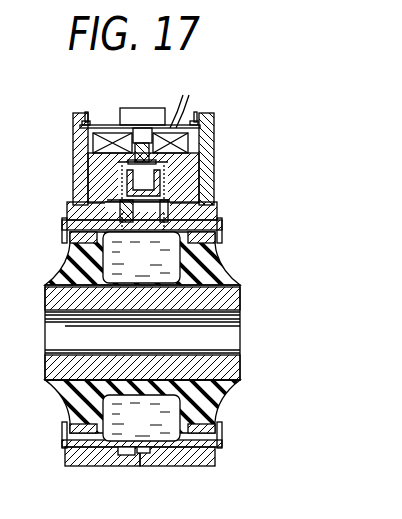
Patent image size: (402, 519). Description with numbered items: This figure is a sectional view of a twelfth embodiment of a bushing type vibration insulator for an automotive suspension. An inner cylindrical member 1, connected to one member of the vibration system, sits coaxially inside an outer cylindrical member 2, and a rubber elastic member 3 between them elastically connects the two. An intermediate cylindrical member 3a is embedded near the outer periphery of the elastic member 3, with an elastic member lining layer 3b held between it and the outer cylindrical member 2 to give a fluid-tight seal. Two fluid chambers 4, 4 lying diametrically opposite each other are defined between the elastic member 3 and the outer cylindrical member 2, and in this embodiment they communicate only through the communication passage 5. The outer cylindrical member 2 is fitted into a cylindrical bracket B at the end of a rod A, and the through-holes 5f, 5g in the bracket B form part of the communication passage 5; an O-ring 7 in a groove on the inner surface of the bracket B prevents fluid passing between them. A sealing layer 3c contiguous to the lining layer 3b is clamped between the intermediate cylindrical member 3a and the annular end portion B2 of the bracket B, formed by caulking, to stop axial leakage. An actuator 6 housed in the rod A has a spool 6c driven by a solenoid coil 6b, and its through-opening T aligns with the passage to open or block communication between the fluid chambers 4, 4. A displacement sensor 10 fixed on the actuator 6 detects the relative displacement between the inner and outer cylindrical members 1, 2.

The inner cylindrical member 1 is at (238, 298).
The outer cylindrical member 2 is at (218, 223).
The elastic member 3 is at (232, 386).
The intermediate cylindrical member 3a is at (207, 466).
The elastic member lining layer 3b is at (92, 466).
The sealing layer 3c is at (63, 442).
The fluid chamber 4 is at (141, 336).
The communication passage 5 is at (167, 170).
The through-hole 5f is at (117, 206).
The through-hole 5g is at (167, 210).
The actuator 6 is at (87, 119).
The solenoid coil 6b is at (98, 142).
The spool 6c is at (144, 128).
The O-ring 7 is at (143, 454).
The displacement sensor 10 is at (128, 108).
The rod A is at (215, 118).
The cylindrical bracket B is at (218, 210).
The annular end portion B2 is at (243, 437).
The through-opening T is at (133, 161).